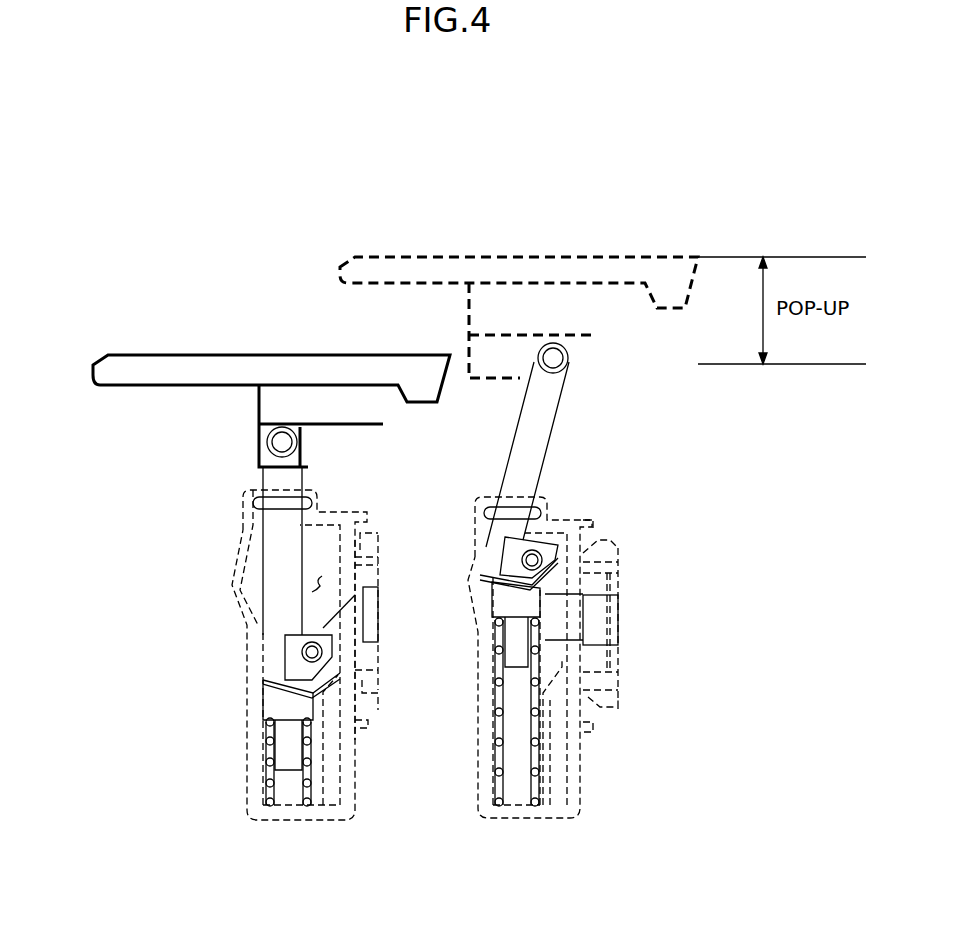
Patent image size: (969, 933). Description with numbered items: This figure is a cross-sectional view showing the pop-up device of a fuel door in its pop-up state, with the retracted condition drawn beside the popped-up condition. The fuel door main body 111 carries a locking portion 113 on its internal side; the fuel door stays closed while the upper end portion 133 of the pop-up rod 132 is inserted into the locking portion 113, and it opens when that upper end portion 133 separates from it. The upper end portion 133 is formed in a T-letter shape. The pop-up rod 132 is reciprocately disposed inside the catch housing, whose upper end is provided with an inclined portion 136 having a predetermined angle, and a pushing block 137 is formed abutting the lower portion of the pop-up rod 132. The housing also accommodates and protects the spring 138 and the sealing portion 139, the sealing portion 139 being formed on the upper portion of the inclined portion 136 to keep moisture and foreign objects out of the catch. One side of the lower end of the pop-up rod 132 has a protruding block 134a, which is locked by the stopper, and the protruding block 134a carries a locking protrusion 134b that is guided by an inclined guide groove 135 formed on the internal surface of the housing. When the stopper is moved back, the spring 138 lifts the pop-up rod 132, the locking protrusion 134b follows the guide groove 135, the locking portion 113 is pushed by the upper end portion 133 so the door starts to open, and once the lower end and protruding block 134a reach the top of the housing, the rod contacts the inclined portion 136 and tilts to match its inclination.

The fuel door main body 111 is at (225, 355).
The locking portion 113 is at (258, 444).
The pop-up rod 132 is at (275, 560).
The upper end portion 133 is at (292, 442).
The protruding block 134a is at (282, 672).
The locking protrusion 134b is at (302, 655).
The guide groove 135 is at (320, 578).
The inclined portion 136 is at (238, 535).
The pushing block 137 is at (286, 702).
The spring 138 is at (272, 762).
The sealing portion 139 is at (262, 505).